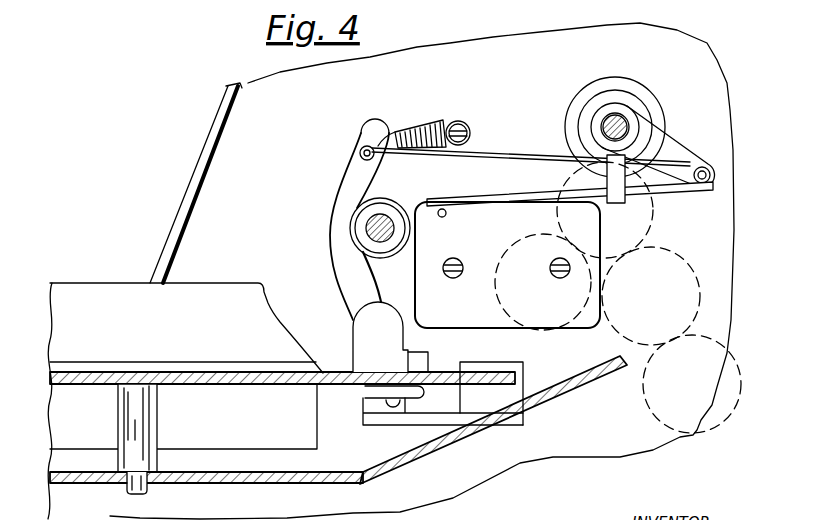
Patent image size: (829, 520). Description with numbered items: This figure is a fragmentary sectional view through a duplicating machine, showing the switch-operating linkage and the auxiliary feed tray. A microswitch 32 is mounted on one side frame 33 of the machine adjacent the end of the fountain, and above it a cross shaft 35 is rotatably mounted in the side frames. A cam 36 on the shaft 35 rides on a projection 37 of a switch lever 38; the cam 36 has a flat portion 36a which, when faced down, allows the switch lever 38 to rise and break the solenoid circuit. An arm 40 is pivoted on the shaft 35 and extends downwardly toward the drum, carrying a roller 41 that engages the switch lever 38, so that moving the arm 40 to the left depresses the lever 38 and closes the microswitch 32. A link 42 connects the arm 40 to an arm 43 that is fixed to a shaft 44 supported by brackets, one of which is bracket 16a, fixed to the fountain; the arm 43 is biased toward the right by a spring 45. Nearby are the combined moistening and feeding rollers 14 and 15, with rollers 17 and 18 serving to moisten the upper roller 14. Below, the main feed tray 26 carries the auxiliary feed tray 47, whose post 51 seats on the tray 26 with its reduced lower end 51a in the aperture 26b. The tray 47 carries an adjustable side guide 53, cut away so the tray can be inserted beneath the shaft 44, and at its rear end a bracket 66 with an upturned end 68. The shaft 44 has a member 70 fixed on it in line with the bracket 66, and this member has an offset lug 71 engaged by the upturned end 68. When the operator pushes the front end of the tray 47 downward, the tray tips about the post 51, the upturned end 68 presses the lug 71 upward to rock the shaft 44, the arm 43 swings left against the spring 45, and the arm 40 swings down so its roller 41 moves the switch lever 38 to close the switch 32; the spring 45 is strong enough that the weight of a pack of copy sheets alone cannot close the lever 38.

The combined moistening and feeding roller 14 is at (651, 296).
The combined moistening and feeding roller 15 is at (692, 384).
The bracket 16a is at (525, 365).
The roller 17 is at (543, 282).
The roller 18 is at (605, 210).
The feed tray 26 is at (283, 480).
The aperture 26b is at (125, 487).
The microswitch 32 is at (507, 265).
The side frame 33 is at (258, 90).
The cross shaft 35 is at (606, 120).
The cam 36 is at (584, 118).
The flat portion 36a is at (590, 146).
The projection 37 is at (628, 166).
The switch lever 38 is at (547, 200).
The arm 40 is at (657, 148).
The roller 41 is at (703, 167).
The link 42 is at (476, 151).
The arm 43 is at (352, 168).
The shaft 44 is at (368, 320).
The spring 45 is at (432, 131).
The auxiliary feed tray 47 is at (212, 378).
The post 51 is at (152, 415).
The reduced lower end 51a is at (148, 488).
The side guide 53 is at (198, 292).
The bracket 66 is at (377, 388).
The upturned end 68 is at (432, 372).
The member 70 is at (360, 345).
The offset lug 71 is at (422, 362).